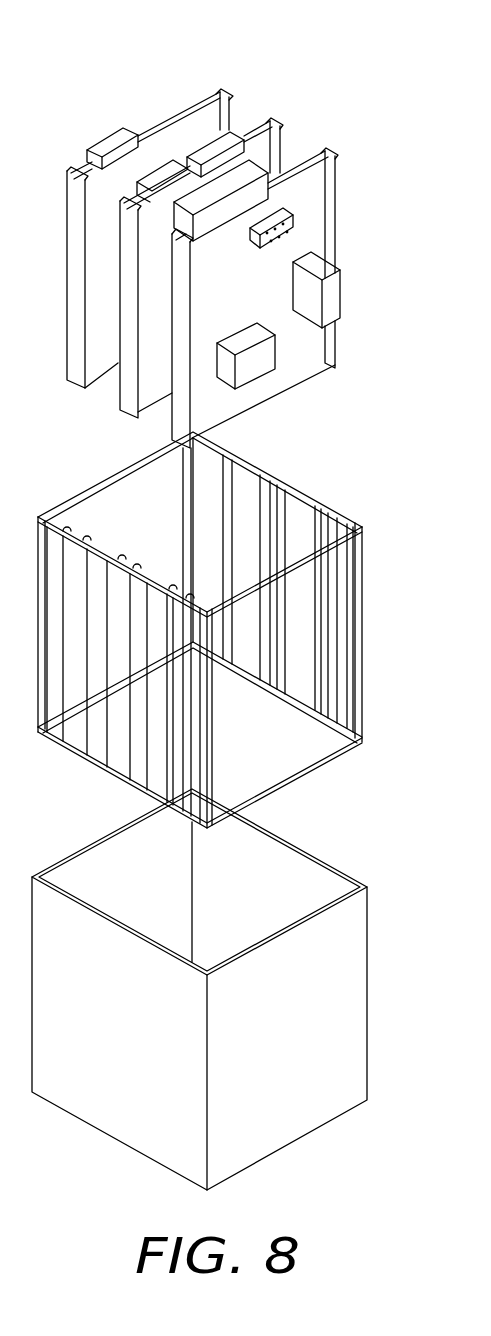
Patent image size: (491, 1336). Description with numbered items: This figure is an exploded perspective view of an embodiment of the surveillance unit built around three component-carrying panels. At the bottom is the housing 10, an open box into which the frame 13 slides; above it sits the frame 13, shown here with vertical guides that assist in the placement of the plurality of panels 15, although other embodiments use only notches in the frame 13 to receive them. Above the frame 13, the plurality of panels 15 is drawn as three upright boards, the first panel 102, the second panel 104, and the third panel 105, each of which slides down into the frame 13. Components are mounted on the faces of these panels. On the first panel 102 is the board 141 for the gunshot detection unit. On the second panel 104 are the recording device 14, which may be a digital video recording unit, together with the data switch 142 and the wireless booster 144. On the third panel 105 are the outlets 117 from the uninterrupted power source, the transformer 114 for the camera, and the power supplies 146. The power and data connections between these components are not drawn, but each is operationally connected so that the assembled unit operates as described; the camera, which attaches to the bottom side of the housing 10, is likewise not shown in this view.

The housing 10 is at (300, 1095).
The frame 13 is at (212, 733).
The recording device 14 is at (223, 187).
The plurality of panels 15 is at (340, 77).
The first panel 102 is at (176, 112).
The second panel 104 is at (245, 130).
The third panel 105 is at (297, 162).
The transformer 114 is at (333, 290).
The outlets 117 is at (297, 223).
The board 141 is at (123, 136).
The data switch 142 is at (200, 147).
The wireless booster 144 is at (153, 177).
The power supplies 146 is at (250, 365).